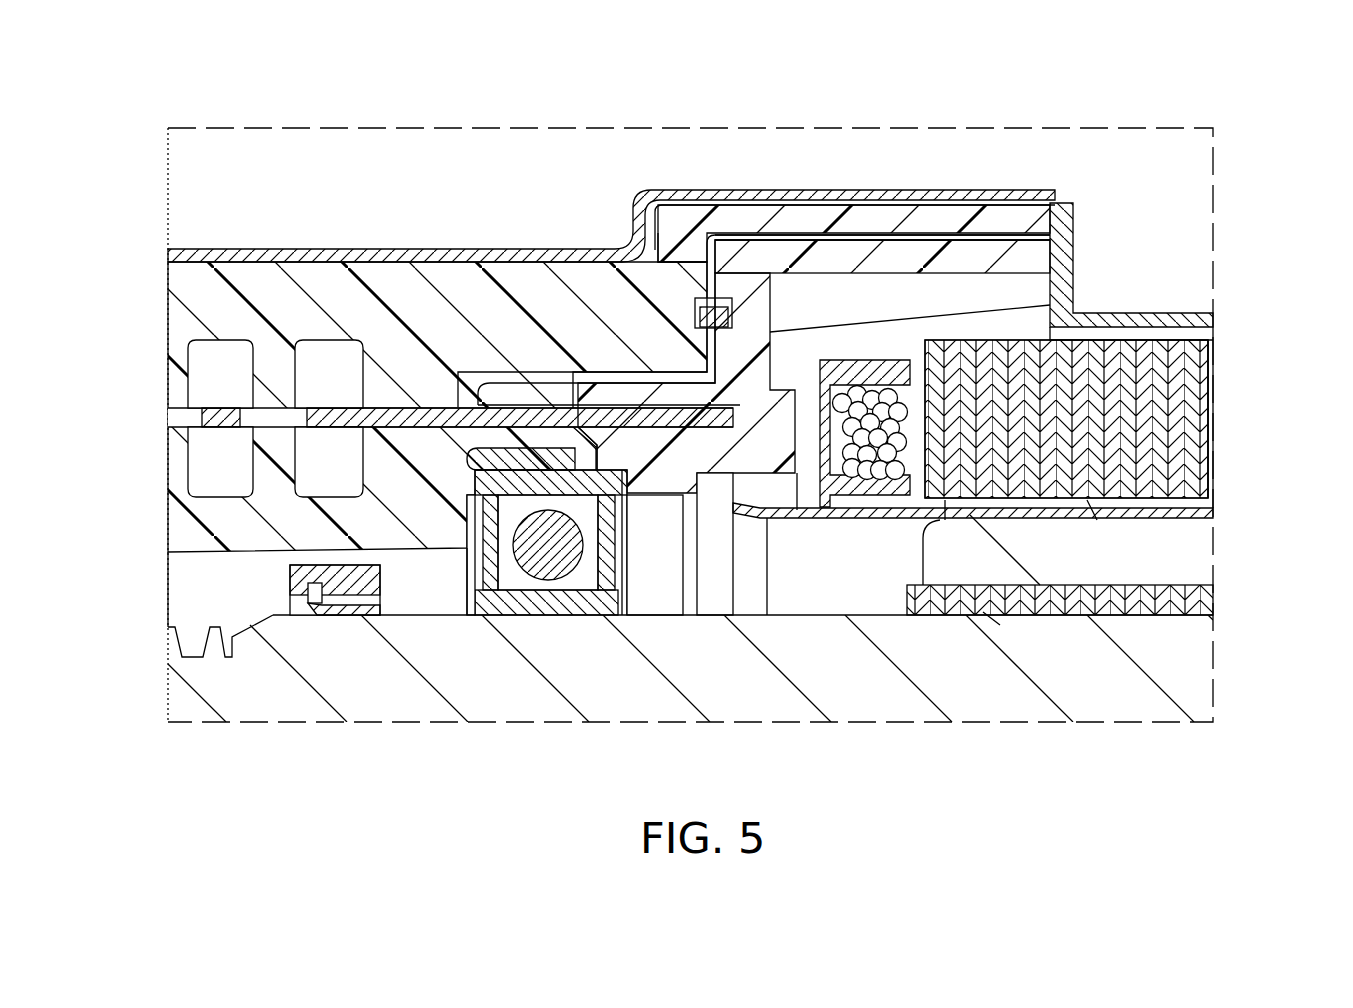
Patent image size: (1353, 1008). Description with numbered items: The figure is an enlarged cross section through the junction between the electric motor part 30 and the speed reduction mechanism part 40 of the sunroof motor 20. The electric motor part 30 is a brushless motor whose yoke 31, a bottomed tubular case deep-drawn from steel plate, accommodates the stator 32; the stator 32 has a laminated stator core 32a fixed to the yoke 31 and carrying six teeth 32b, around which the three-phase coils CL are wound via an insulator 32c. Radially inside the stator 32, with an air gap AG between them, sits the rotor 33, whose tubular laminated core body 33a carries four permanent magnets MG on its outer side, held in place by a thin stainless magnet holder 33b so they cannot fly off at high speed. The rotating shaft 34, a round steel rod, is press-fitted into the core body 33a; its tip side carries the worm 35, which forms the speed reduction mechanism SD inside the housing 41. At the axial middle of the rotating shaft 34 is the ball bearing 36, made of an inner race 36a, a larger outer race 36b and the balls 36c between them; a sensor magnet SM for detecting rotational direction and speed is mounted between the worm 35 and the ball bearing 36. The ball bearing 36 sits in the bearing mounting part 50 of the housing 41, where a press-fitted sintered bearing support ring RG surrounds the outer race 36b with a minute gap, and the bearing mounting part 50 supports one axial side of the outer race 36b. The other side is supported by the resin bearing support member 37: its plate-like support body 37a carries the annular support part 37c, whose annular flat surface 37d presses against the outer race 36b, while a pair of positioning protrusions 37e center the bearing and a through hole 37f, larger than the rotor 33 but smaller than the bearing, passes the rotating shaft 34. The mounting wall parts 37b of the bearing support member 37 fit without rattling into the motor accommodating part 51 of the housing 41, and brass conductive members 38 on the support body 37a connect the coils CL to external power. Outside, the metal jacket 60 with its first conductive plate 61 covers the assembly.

The sunroof motor 20 is at (205, 185).
The electric motor part 30 is at (1183, 297).
The yoke 31 is at (1147, 298).
The stator 32 is at (1191, 320).
The stator core 32a is at (1224, 394).
The teeth 32b is at (1097, 451).
The insulator 32c is at (885, 372).
The rotor 33 is at (1200, 503).
The core body 33a is at (1090, 520).
The magnet holder 33b is at (833, 520).
The rotating shaft 34 is at (1144, 695).
The worm 35 is at (170, 650).
The ball bearing 36 is at (468, 625).
The inner race 36a is at (540, 605).
The outer race 36b is at (452, 455).
The balls 36c is at (535, 472).
The bearing support member 37 is at (984, 220).
The support body 37a is at (755, 282).
The mounting wall parts 37b is at (848, 258).
The annular support part 37c is at (612, 440).
The annular flat surface 37d is at (650, 505).
The positioning protrusions 37e is at (578, 448).
The through hole 37f is at (712, 530).
The conductive members 38 is at (318, 418).
The speed reduction mechanism part 40 is at (185, 254).
The housing 41 is at (168, 301).
The bearing mounting part 50 is at (555, 548).
The motor accommodating part 51 is at (945, 252).
The metal jacket 60 is at (308, 240).
The first conductive plate 61 is at (775, 192).
The sensor magnet SM is at (300, 578).
The speed reduction mechanism SD is at (160, 619).
The bearing support ring RG is at (481, 565).
The coils CL is at (945, 500).
The permanent magnets MG is at (1167, 585).
The air gap AG is at (1023, 602).